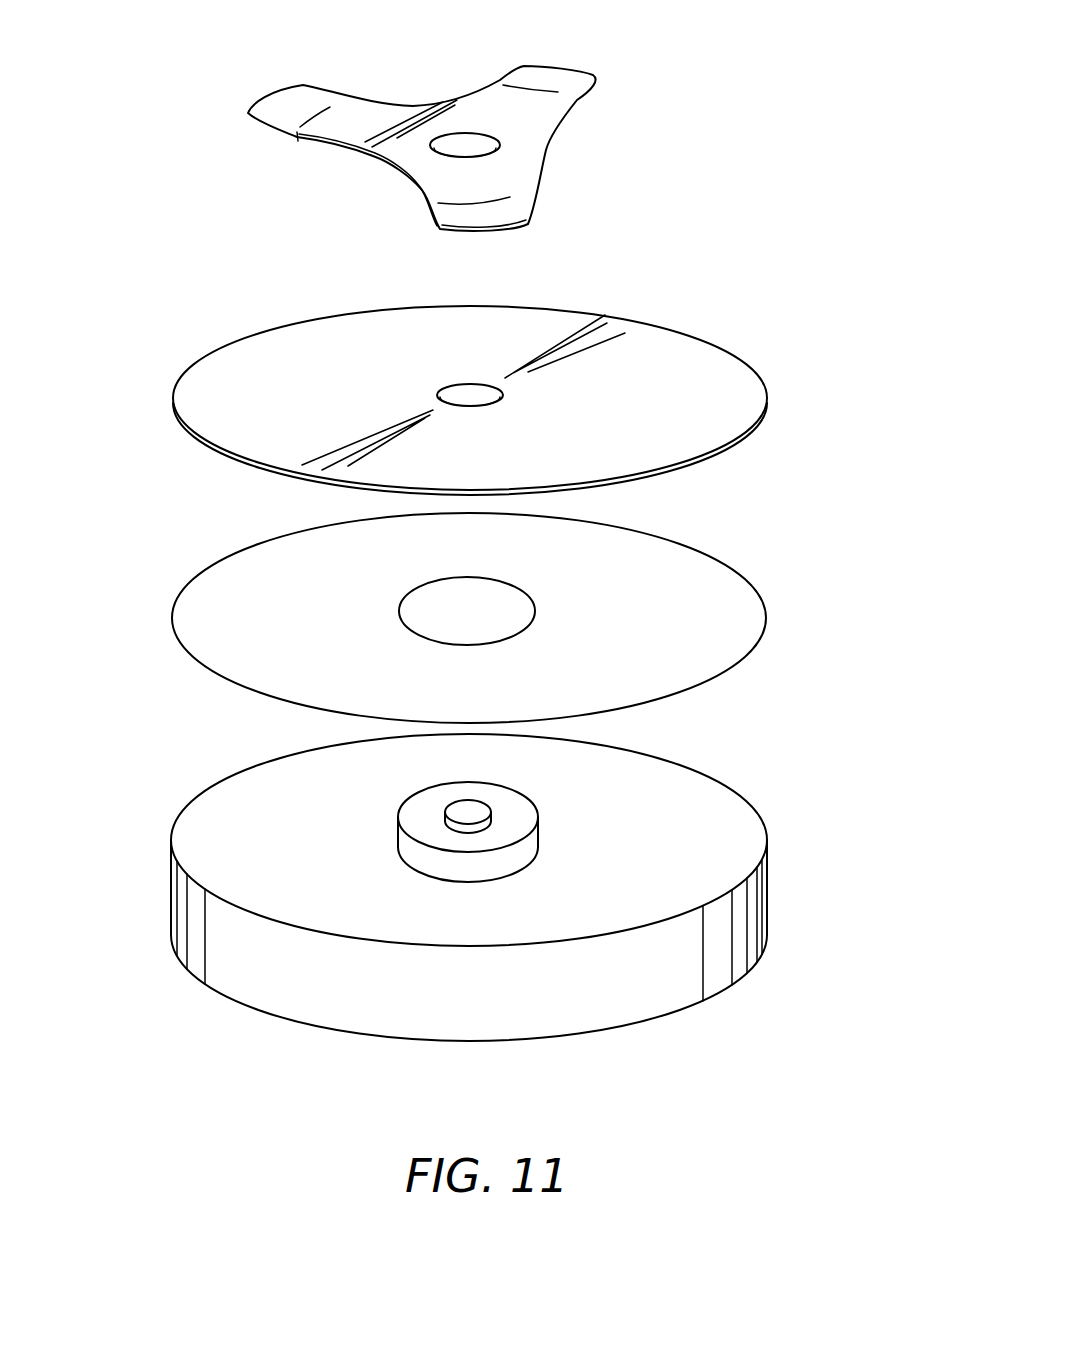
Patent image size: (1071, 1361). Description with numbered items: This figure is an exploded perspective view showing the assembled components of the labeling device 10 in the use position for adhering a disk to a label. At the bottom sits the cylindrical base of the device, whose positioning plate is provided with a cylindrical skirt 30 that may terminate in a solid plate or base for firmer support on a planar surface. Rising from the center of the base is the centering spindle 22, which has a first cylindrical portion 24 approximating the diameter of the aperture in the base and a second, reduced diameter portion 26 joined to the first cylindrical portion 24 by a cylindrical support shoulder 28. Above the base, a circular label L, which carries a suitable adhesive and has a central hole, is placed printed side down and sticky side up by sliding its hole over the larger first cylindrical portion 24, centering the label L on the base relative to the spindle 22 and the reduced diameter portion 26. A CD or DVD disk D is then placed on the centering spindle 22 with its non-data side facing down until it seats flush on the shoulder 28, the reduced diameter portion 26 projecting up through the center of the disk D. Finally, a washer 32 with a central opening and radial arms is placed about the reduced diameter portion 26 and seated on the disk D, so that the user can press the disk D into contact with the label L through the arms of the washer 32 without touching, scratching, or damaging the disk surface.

The labeling device 10 is at (165, 1112).
The centering spindle 22 is at (572, 849).
The first cylindrical portion 24 is at (415, 849).
The reduced diameter portion 26 is at (472, 813).
The cylindrical support shoulder 28 is at (515, 817).
The cylindrical skirt 30 is at (675, 963).
The washer 32 is at (652, 55).
The disk D is at (792, 340).
The label L is at (798, 583).